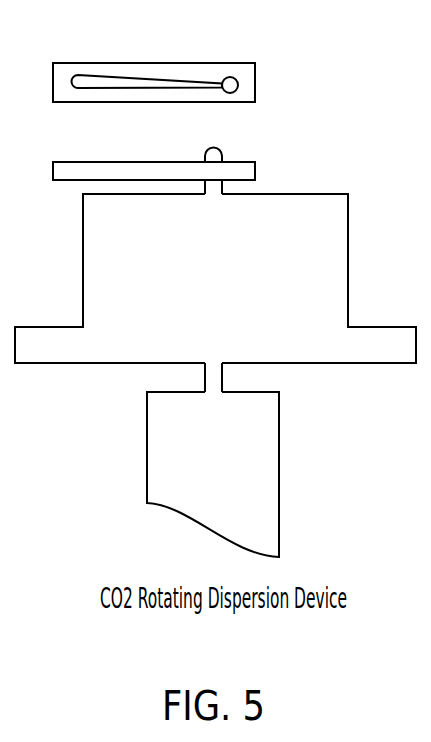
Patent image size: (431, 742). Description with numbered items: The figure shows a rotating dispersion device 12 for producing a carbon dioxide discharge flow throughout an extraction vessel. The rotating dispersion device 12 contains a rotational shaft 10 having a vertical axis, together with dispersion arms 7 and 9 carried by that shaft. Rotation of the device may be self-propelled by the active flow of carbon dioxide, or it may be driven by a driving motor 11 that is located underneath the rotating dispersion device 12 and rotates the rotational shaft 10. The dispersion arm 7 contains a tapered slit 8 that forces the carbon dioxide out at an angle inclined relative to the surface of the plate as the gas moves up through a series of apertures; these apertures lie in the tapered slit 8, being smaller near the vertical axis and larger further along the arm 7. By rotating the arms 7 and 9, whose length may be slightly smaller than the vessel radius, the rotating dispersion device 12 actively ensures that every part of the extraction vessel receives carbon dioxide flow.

The dispersion arm 7 is at (97, 63).
The tapered slit 8 is at (185, 82).
The dispersion arm 9 is at (60, 172).
The rotational shaft 10 is at (217, 190).
The driving motor 11 is at (268, 482).
The rotating dispersion device 12 is at (338, 227).